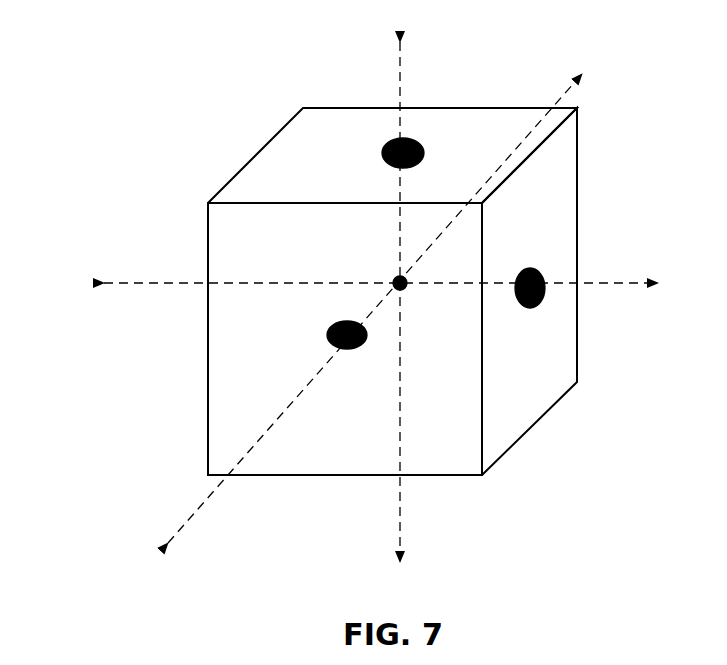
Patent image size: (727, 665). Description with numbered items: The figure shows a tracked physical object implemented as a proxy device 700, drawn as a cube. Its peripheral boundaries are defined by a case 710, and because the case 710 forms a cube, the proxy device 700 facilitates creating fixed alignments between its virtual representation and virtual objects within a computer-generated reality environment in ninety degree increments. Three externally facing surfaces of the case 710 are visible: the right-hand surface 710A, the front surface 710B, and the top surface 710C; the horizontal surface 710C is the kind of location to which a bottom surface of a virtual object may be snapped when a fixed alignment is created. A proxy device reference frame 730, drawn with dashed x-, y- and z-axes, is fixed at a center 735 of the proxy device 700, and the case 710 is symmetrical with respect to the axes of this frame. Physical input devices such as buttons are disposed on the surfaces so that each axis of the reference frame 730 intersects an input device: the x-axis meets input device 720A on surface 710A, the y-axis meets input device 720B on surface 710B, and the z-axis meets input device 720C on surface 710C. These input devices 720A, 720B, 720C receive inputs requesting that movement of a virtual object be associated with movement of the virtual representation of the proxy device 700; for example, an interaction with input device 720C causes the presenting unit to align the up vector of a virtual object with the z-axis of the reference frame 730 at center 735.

The proxy device 700 is at (104, 155).
The case 710 is at (204, 347).
The surface 710A is at (535, 383).
The surface 710B is at (272, 236).
The surface 710C is at (490, 136).
The input device 720A is at (545, 282).
The input device 720B is at (350, 348).
The input device 720C is at (388, 152).
The proxy device reference frame 730 is at (394, 530).
The center 735 is at (393, 281).